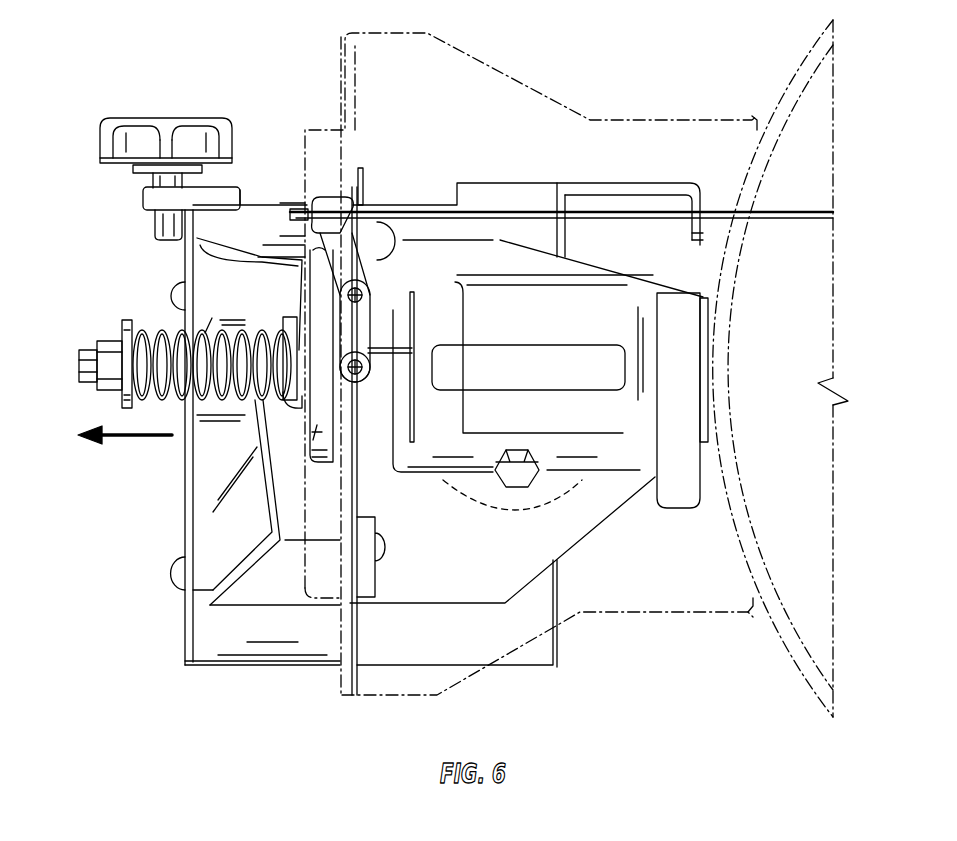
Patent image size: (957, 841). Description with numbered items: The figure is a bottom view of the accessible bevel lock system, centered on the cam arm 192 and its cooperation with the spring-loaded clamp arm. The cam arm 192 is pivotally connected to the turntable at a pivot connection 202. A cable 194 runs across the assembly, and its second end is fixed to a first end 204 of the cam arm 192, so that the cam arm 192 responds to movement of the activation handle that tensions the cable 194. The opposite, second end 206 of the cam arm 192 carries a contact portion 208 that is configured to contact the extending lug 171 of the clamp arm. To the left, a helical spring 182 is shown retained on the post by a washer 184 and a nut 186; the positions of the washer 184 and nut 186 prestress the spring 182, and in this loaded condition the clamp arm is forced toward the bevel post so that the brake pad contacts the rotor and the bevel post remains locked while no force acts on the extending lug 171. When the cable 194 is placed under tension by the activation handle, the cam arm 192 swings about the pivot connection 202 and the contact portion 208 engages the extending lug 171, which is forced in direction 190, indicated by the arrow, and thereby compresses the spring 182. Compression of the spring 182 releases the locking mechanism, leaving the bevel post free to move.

The extending lug 171 is at (317, 432).
The spring 182 is at (163, 332).
The washer 184 is at (122, 397).
The nut 186 is at (107, 340).
The direction 190 is at (143, 440).
The cam arm 192 is at (360, 332).
The cable 194 is at (618, 211).
The pivot connection 202 is at (362, 290).
The first end 204 is at (331, 207).
The second end 206 is at (360, 369).
The contact portion 208 is at (348, 365).